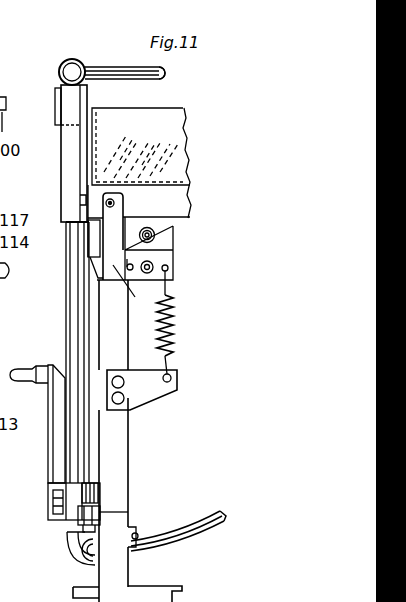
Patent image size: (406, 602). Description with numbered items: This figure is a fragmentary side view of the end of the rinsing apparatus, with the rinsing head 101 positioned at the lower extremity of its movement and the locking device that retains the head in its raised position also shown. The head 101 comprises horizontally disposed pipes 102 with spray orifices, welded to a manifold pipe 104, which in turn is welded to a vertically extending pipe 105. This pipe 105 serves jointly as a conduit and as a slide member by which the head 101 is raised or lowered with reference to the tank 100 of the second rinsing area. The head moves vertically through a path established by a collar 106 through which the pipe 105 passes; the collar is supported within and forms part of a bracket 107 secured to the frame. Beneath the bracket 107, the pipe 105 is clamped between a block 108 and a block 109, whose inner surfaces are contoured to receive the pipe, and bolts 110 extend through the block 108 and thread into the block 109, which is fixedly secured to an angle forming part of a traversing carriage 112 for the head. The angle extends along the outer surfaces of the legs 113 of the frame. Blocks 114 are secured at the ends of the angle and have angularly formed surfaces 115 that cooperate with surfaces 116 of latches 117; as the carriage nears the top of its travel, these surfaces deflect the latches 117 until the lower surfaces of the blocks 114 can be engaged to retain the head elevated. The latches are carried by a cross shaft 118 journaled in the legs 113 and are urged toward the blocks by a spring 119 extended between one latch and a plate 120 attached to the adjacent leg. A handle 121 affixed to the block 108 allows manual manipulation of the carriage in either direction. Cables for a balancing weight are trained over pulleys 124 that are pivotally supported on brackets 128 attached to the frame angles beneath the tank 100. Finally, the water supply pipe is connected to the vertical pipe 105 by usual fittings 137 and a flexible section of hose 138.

The tank 100 is at (167, 143).
The rinsing head 101 is at (100, 64).
The pipes 102 is at (141, 74).
The manifold pipe 104 is at (72, 70).
The vertical pipe 105 is at (73, 235).
The collar 106 is at (58, 95).
The bracket 107 is at (70, 168).
The block 108 is at (56, 496).
The block 109 is at (92, 488).
The bolts 110 is at (50, 508).
The traversing carriage 112 is at (44, 422).
The legs 113 is at (130, 448).
The blocks 114 is at (82, 510).
The angularly formed surfaces 115 is at (92, 514).
The surfaces 116 is at (93, 272).
The latches 117 is at (138, 290).
The cross shaft 118 is at (114, 203).
The spring 119 is at (173, 320).
The plate 120 is at (178, 375).
The handle 121 is at (26, 372).
The pulleys 124 is at (162, 245).
The brackets 128 is at (174, 221).
The fittings 137 is at (78, 550).
The hose 138 is at (190, 533).